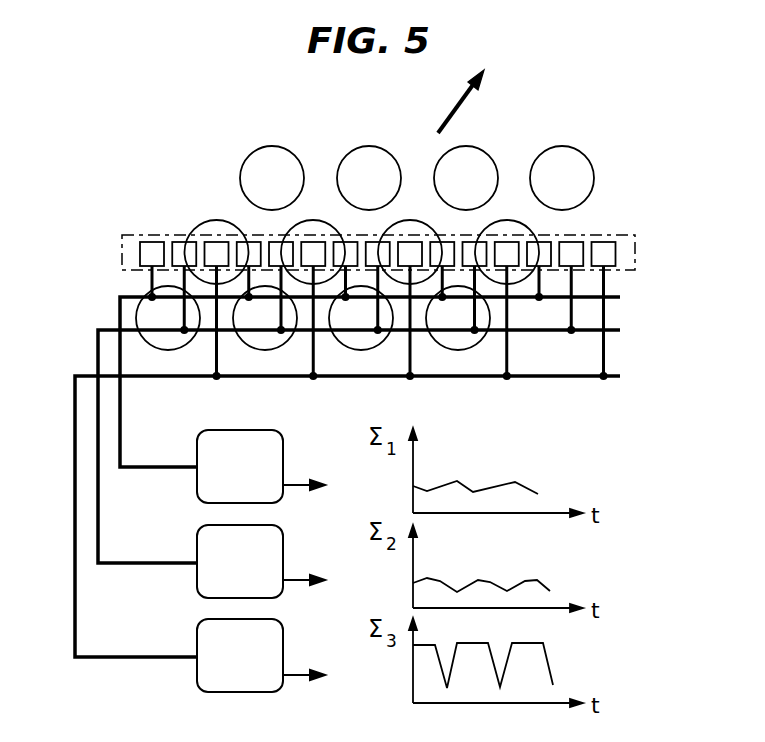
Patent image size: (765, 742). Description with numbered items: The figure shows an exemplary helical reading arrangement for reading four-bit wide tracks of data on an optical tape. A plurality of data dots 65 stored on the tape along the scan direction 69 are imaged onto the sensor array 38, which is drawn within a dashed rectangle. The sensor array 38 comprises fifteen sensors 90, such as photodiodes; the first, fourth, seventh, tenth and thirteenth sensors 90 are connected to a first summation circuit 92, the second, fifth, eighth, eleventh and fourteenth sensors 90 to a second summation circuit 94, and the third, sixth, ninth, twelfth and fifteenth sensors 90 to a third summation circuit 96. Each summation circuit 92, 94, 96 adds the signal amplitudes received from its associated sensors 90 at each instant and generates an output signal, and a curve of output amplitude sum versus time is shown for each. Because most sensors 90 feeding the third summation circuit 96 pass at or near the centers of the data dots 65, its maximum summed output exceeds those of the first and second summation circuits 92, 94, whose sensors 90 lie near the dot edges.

The sensor array 38 is at (122, 252).
The data dots 65 is at (220, 227).
The scan direction 69 is at (447, 115).
The sensors 90 is at (183, 241).
The first summation circuit 92 is at (283, 452).
The second summation circuit 94 is at (283, 547).
The third summation circuit 96 is at (283, 640).